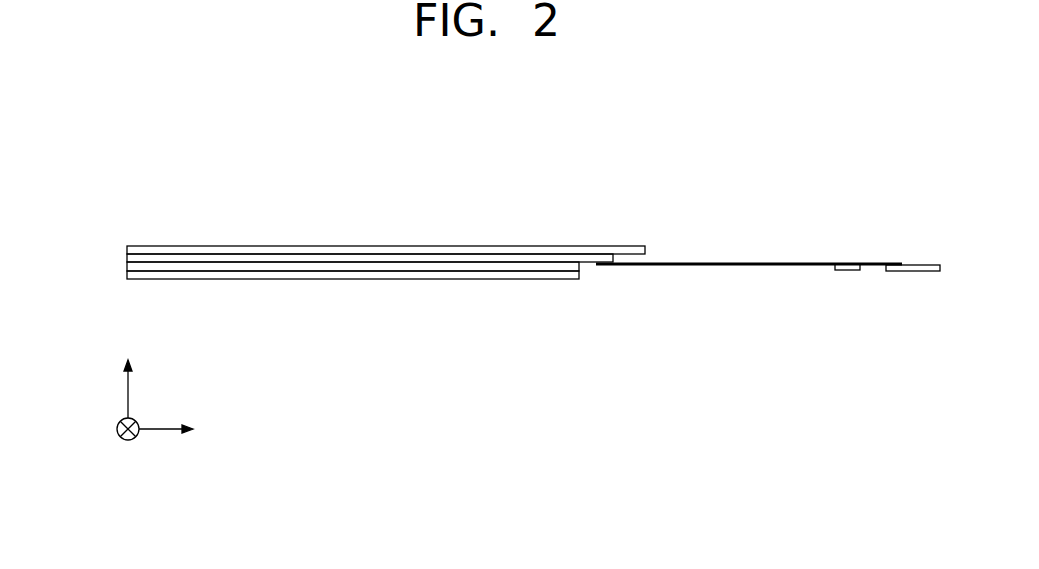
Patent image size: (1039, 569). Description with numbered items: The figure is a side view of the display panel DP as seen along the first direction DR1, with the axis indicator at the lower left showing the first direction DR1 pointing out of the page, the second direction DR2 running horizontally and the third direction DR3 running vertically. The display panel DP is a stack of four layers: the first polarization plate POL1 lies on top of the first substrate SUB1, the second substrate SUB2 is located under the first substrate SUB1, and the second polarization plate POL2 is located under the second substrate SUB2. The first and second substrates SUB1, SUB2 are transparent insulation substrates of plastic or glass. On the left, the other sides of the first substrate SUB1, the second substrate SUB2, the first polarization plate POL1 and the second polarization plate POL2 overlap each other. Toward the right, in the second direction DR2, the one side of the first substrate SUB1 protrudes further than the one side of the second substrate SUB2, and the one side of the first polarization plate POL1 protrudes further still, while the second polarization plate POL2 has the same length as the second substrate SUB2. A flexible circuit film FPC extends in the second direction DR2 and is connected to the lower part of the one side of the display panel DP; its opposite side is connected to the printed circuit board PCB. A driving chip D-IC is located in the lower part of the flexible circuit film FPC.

The display panel DP is at (611, 183).
The first polarization plate POL1 is at (127, 250).
The first substrate SUB1 is at (127, 258).
The second substrate SUB2 is at (127, 266).
The second polarization plate POL2 is at (127, 275).
The flexible circuit film FPC is at (820, 262).
The driving chip D-IC is at (847, 271).
The printed circuit board PCB is at (910, 271).
The first direction DR1 is at (127, 443).
The second direction DR2 is at (185, 433).
The third direction DR3 is at (127, 377).